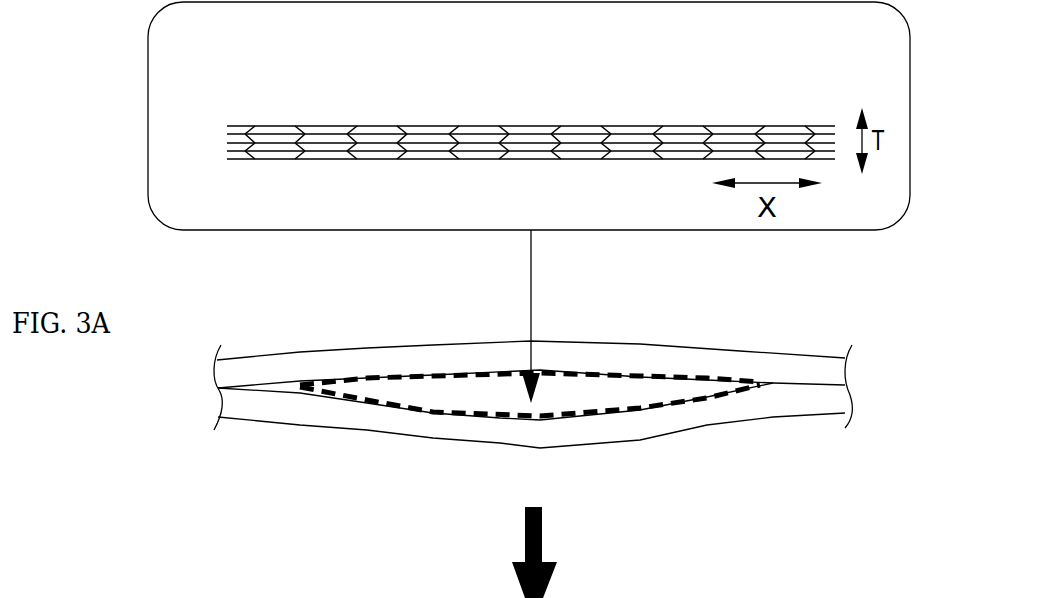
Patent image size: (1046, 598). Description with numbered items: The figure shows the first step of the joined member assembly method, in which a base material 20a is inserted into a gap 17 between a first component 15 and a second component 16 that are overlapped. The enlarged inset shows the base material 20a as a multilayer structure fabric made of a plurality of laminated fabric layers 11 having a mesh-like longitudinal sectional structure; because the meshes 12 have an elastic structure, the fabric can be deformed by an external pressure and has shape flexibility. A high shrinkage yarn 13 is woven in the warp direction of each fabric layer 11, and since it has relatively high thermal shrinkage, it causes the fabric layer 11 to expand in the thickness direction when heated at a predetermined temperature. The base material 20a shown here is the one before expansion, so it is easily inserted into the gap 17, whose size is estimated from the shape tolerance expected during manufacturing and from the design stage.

The base material 20a is at (308, 94).
The fabric layer 11 is at (226, 124).
The mesh 12 is at (679, 134).
The high shrinkage yarn 13 is at (497, 128).
The first component 15 is at (815, 398).
The second component 16 is at (813, 367).
The gap 17 is at (650, 393).